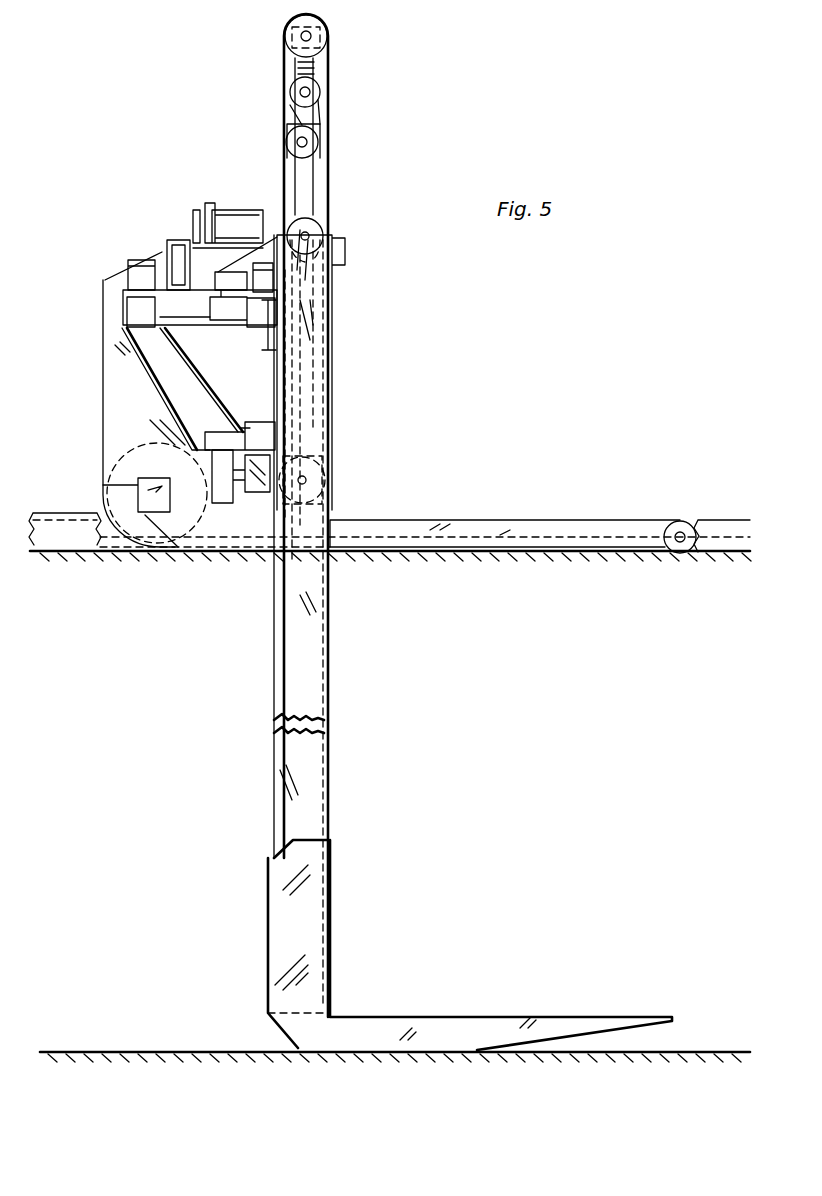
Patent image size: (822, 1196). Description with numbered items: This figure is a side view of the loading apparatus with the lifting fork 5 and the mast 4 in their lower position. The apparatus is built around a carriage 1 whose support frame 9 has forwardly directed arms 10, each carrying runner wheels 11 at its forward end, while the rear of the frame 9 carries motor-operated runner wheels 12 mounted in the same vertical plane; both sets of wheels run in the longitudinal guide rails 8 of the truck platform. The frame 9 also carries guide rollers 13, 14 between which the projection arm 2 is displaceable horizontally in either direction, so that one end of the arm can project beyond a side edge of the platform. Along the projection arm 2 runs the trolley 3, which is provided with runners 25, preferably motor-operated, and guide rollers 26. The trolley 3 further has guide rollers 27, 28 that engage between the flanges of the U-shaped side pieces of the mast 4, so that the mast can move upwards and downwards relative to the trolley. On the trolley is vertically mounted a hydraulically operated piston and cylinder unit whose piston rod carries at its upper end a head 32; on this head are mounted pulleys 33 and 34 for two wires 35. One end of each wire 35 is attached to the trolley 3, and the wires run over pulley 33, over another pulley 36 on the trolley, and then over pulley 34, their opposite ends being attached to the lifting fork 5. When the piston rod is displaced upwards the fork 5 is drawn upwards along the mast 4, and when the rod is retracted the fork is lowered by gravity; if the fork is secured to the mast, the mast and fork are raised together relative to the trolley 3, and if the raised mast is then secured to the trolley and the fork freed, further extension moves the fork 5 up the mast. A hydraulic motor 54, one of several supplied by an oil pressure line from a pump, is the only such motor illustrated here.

The carriage 1 is at (100, 304).
The projection arm 2 is at (272, 348).
The trolley 3 is at (314, 380).
The mast 4 is at (332, 748).
The lifting fork 5 is at (336, 932).
The guide rails 8 is at (78, 520).
The support frame 9 is at (118, 396).
The forwardly directed arms 10 is at (456, 524).
The runner wheels 11 is at (680, 530).
The motor-operated runner wheels 12 is at (128, 518).
The guide rollers 13 is at (144, 276).
The guide rollers 14 is at (248, 490).
The runners 25 is at (265, 280).
The guide rollers 26 is at (229, 312).
The guide roller 27 is at (318, 228).
The guide roller 28 is at (326, 478).
The head 32 is at (320, 66).
The pulley 33 is at (298, 32).
The pulley 34 is at (296, 92).
The wires 35 is at (322, 114).
The pulley 36 is at (312, 146).
The hydraulic motor 54 is at (252, 226).